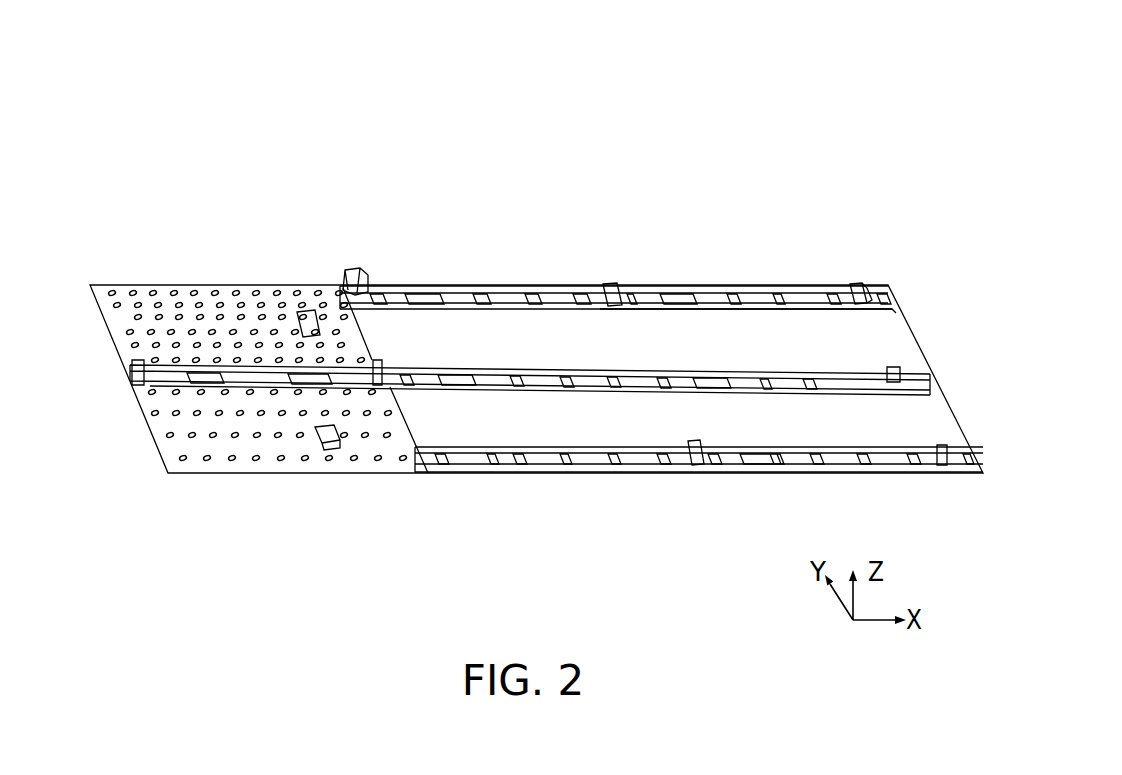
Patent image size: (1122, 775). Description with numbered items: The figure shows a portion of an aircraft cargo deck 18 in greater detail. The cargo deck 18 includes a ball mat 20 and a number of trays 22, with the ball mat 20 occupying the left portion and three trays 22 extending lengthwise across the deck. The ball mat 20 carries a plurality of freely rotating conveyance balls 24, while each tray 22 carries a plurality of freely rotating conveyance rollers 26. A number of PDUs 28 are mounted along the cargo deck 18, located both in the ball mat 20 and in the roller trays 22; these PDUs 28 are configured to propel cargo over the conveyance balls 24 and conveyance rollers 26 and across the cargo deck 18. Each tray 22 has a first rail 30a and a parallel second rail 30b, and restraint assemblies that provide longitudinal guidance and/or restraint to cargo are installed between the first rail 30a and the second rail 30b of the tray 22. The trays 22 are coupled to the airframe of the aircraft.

The cargo deck 18 is at (288, 166).
The ball mat 20 is at (147, 300).
The tray 22 is at (792, 291).
The conveyance ball 24 is at (212, 302).
The conveyance roller 26 is at (524, 292).
The PDU 28 is at (309, 316).
The first rail 30a is at (877, 293).
The second rail 30b is at (898, 312).